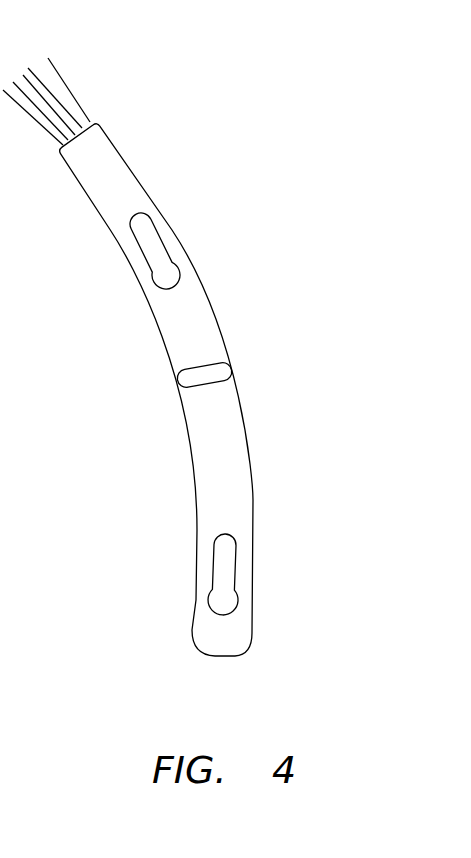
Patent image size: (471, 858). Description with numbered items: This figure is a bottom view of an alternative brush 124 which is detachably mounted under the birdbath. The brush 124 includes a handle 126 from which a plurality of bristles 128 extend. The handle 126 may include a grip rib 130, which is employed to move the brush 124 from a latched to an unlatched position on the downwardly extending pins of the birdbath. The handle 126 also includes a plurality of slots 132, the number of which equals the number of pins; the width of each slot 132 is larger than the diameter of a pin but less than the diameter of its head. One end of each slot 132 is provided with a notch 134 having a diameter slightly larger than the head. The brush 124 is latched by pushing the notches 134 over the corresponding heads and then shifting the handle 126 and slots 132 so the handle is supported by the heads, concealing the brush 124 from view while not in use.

The brush 124 is at (167, 329).
The handle 126 is at (173, 390).
The bristles 128 is at (62, 79).
The grip rib 130 is at (218, 373).
The slots 132 is at (143, 394).
The notch 134 is at (180, 281).